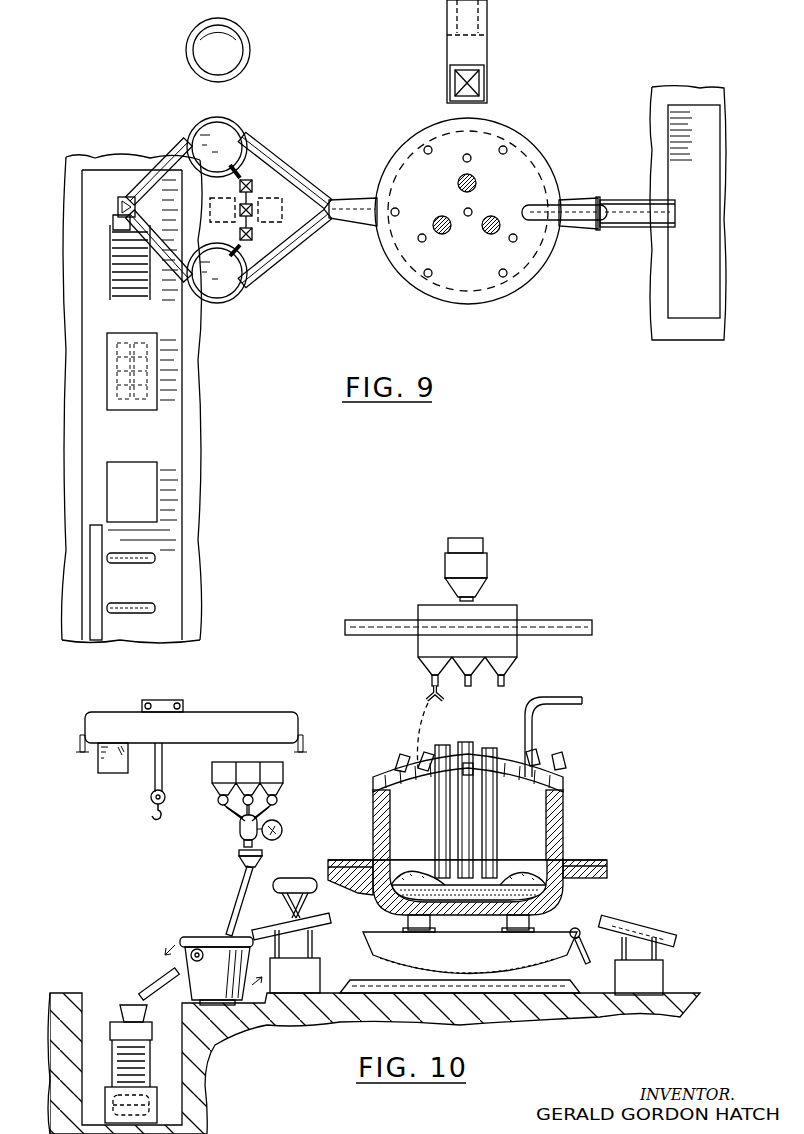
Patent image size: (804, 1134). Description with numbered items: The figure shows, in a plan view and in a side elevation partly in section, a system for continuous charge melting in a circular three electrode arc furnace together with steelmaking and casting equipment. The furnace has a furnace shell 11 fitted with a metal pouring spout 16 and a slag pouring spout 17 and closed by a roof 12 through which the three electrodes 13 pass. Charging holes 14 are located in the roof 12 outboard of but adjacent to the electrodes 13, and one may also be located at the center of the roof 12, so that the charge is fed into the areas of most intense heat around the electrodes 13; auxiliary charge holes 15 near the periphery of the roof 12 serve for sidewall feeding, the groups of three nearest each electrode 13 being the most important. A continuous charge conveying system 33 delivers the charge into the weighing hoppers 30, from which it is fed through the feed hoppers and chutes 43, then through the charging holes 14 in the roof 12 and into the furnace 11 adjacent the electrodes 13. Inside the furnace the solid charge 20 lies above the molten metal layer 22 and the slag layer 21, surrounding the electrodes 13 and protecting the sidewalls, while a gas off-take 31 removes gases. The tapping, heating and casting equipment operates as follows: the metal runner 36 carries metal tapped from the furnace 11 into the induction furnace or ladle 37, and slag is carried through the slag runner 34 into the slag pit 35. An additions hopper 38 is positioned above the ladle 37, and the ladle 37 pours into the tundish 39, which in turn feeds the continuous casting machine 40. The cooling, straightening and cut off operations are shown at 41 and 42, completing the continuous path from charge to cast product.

In FIG. 9, the furnace shell 11 is at (396, 278).
In FIG. 10, the furnace shell 11 is at (563, 815).
In FIG. 9, the roof 12 is at (448, 280).
In FIG. 10, the roof 12 is at (380, 775).
In FIG. 9, the electrodes 13 is at (459, 184).
In FIG. 10, the electrodes 13 is at (436, 818).
In FIG. 9, the charging holes 14 is at (510, 240).
In FIG. 10, the charging holes 14 is at (420, 766).
In FIG. 9, the auxiliary charge holes 15 is at (397, 207).
In FIG. 10, the auxiliary charge holes 15 is at (548, 778).
In FIG. 9, the metal pouring spout 16 is at (355, 218).
In FIG. 10, the metal pouring spout 16 is at (341, 860).
In FIG. 9, the slag pouring spout 17 is at (572, 200).
In FIG. 10, the slag pouring spout 17 is at (590, 866).
In FIG. 10, the solid charge 20 is at (405, 870).
In FIG. 10, the slag layer 21 is at (492, 903).
In FIG. 10, the molten metal layer 22 is at (450, 900).
In FIG. 10, the weighing hoppers 30 is at (510, 606).
In FIG. 9, the gas off-take 31 is at (521, 207).
In FIG. 10, the gas off-take 31 is at (556, 700).
In FIG. 9, the continuous charge conveying system 33 is at (487, 48).
In FIG. 10, the continuous charge conveying system 33 is at (488, 565).
In FIG. 9, the slag runner 34 is at (627, 200).
In FIG. 10, the slag runner 34 is at (643, 926).
In FIG. 9, the slag pit 35 is at (668, 254).
In FIG. 10, the slag pit 35 is at (683, 1001).
In FIG. 9, the metal runner 36 is at (304, 186).
In FIG. 10, the metal runner 36 is at (294, 940).
In FIG. 9, the ladle 37 is at (238, 128).
In FIG. 10, the ladle 37 is at (200, 937).
In FIG. 9, the additions hopper 38 is at (268, 198).
In FIG. 10, the additions hopper 38 is at (212, 786).
In FIG. 9, the tundish 39 is at (118, 206).
In FIG. 10, the tundish 39 is at (129, 1004).
In FIG. 9, the continuous casting machine 40 is at (113, 222).
In FIG. 10, the continuous casting machine 40 is at (120, 1027).
In FIG. 9, the cooling, straightening and cut off operations 41 is at (107, 368).
In FIG. 10, the cooling, straightening and cut off operations 41 is at (105, 1110).
In FIG. 9, the cooling, straightening and cut off operations 42 is at (107, 490).
In FIG. 10, the feed hoppers and chutes 43 is at (428, 677).